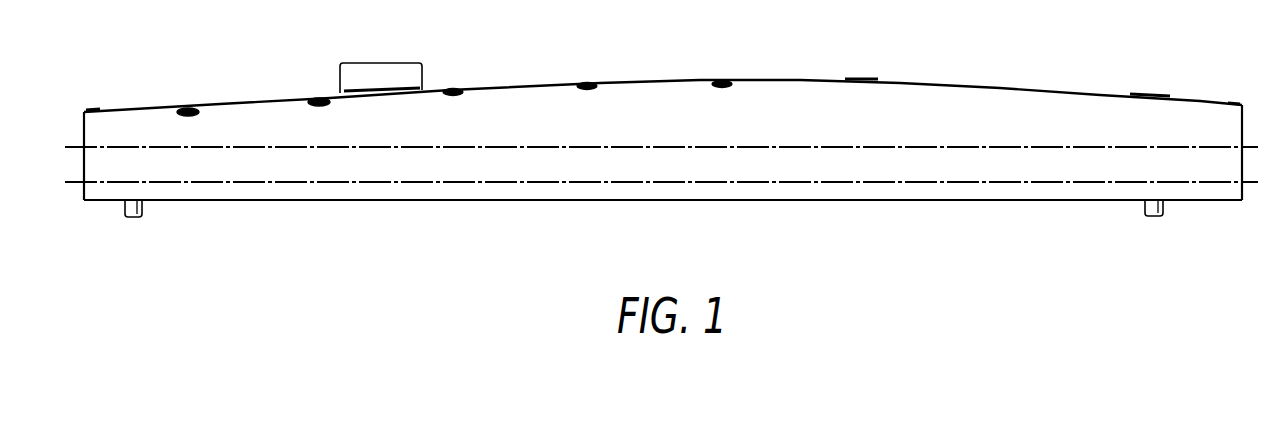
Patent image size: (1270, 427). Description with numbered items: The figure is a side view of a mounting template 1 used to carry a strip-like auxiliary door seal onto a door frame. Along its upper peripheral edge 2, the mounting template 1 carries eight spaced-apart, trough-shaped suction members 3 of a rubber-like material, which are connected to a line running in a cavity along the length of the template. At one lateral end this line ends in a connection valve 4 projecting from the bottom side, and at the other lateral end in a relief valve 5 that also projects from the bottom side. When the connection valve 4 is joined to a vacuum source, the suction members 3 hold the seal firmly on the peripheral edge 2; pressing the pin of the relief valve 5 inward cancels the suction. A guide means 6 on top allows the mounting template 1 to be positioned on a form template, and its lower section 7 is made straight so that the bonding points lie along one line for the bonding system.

The mounting template 1 is at (1031, 208).
The peripheral edge 2 is at (920, 85).
The suction members 3 is at (588, 83).
The connection valve 4 is at (1155, 215).
The relief valve 5 is at (135, 216).
The guide means 6 is at (390, 76).
The lower section 7 is at (632, 170).